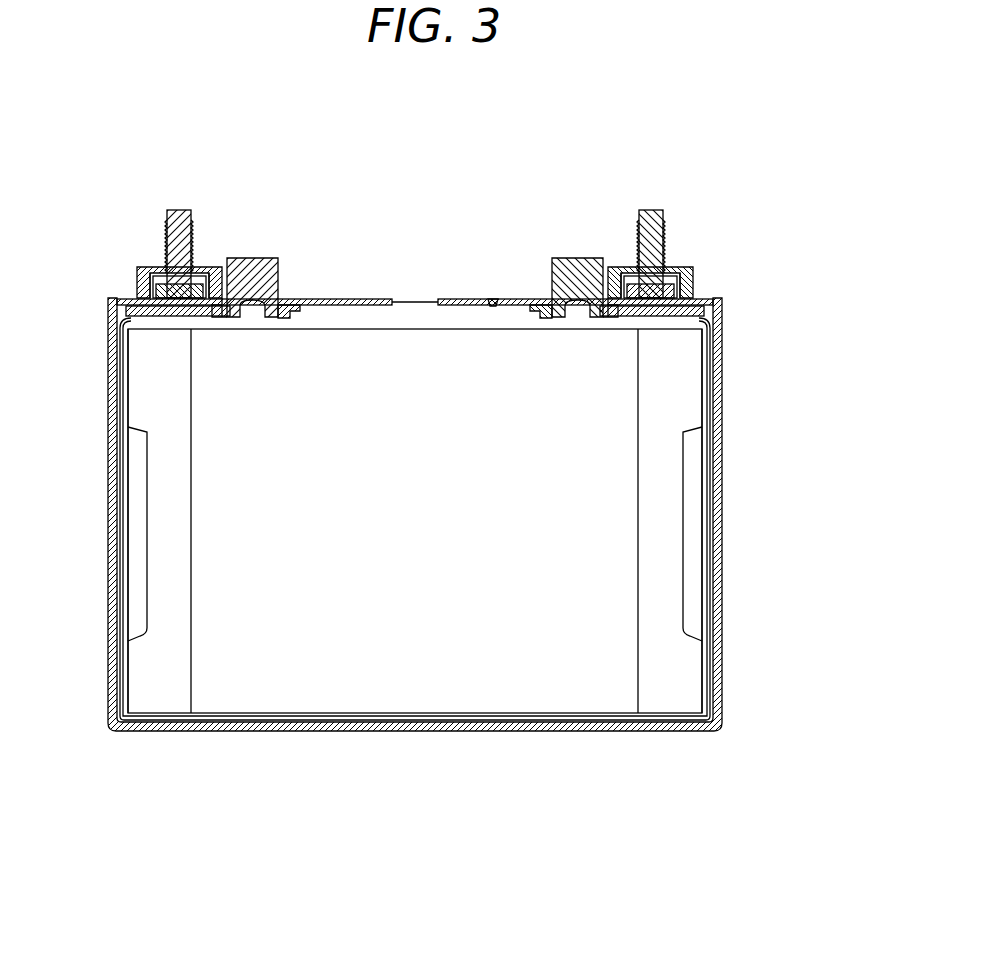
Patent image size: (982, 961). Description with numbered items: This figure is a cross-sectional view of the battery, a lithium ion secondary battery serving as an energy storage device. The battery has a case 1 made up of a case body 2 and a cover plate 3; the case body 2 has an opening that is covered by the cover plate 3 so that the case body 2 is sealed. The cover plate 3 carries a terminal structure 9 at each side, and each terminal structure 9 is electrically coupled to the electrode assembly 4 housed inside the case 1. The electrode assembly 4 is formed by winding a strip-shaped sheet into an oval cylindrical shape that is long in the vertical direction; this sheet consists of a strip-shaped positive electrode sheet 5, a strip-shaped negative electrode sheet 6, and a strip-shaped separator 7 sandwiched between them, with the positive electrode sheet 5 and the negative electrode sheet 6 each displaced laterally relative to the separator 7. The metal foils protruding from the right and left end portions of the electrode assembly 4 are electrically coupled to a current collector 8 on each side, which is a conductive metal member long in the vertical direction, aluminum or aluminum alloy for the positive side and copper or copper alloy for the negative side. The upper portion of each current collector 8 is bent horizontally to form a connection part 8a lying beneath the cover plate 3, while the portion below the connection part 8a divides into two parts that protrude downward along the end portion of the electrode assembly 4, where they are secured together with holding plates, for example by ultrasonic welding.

The case 1 is at (476, 506).
The case body 2 is at (719, 360).
The cover plate 3 is at (708, 300).
The electrode assembly 4 is at (458, 732).
The positive electrode sheet 5 is at (163, 695).
The negative electrode sheet 6 is at (675, 693).
The separator 7 is at (340, 695).
The current collector 8 is at (138, 520).
The connection part 8a is at (185, 313).
The terminal structure 9 is at (236, 232).